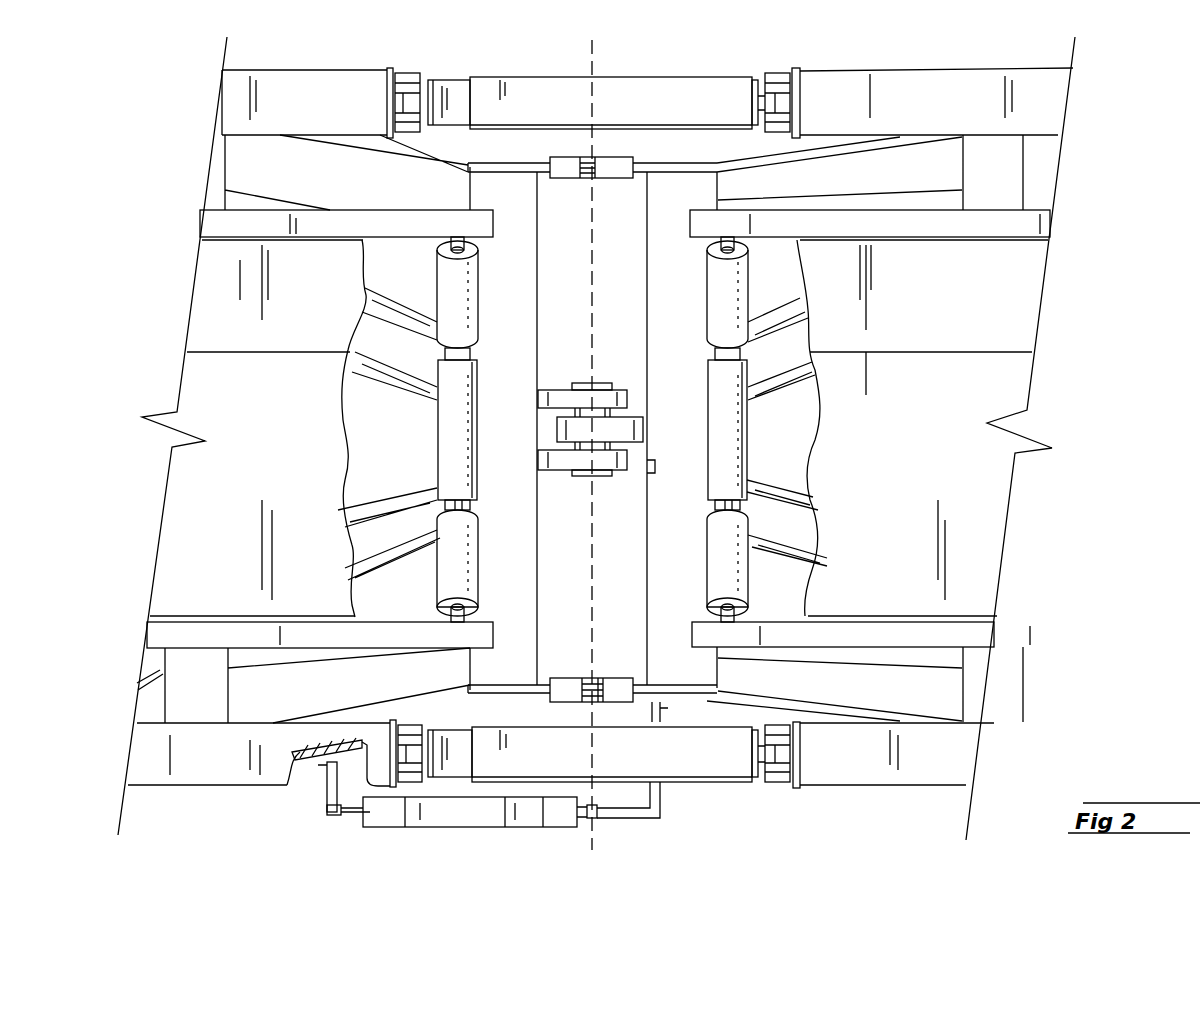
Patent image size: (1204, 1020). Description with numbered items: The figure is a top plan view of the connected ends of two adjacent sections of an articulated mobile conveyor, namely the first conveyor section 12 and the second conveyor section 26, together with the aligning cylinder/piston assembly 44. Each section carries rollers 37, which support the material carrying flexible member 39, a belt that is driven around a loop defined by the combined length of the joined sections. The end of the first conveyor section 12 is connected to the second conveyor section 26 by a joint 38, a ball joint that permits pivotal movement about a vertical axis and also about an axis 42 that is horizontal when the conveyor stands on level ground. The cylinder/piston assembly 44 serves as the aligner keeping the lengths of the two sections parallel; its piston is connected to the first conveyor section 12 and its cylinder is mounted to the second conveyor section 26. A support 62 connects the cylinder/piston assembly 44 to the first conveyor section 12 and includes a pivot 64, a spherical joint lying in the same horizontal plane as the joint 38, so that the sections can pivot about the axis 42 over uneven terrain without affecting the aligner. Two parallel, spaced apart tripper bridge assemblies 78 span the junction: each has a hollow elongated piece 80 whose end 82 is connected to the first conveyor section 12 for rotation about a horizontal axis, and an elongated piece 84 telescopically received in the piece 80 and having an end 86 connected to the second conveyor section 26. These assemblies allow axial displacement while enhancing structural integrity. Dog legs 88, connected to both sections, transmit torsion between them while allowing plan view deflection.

The first conveyor section 12 is at (908, 447).
The second conveyor section 26 is at (293, 416).
The rollers 37 is at (457, 408).
The joint 38 is at (582, 378).
The material carrying flexible member 39 is at (779, 458).
The axis 42 is at (590, 57).
The cylinder/piston assembly 44 is at (527, 826).
The support 62 is at (713, 710).
The pivot 64 is at (610, 818).
The tripper bridge assemblies 78 is at (677, 100).
The hollow elongated piece 80 is at (737, 97).
The end 82 is at (782, 107).
The elongated piece 84 is at (460, 97).
The end 86 is at (410, 100).
The dog legs 88 is at (612, 710).